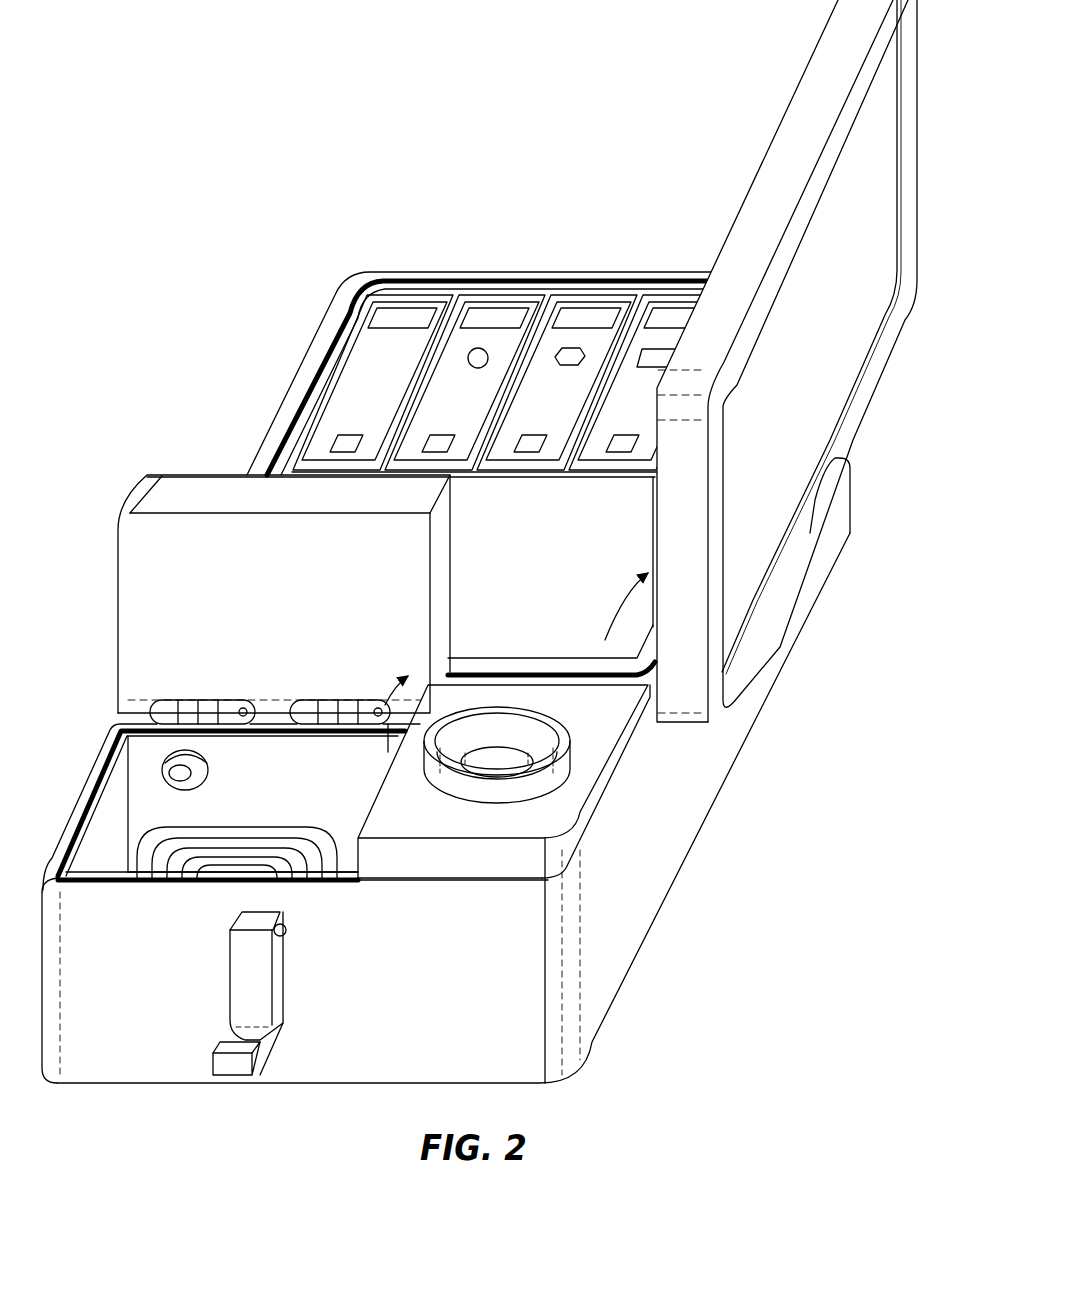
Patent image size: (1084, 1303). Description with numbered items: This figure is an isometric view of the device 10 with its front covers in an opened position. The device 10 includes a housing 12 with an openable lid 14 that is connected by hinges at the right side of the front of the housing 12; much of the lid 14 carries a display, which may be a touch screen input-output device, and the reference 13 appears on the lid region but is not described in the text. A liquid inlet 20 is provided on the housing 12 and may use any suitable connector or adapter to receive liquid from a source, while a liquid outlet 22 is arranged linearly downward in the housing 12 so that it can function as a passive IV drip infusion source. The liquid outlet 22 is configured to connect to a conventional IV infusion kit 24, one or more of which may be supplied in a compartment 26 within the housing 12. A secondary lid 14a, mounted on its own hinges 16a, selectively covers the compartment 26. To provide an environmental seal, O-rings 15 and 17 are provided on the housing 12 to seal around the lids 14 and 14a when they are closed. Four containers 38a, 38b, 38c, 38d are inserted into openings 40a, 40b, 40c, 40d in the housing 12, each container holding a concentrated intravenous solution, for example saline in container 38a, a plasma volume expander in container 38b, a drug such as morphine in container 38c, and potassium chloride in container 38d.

The device 10 is at (220, 428).
The housing 12 is at (648, 895).
The lid 13 is at (878, 300).
The openable lid 14 is at (722, 688).
The secondary lid 14a is at (128, 598).
The O-ring 15 is at (292, 405).
The hinges 16a is at (242, 708).
The O-ring 17 is at (92, 782).
The liquid inlet 20 is at (577, 762).
The liquid outlet 22 is at (192, 760).
The IV infusion kit 24 is at (238, 826).
The compartment 26 is at (355, 795).
The container 38a is at (382, 306).
The container 38b is at (482, 302).
The container 38c is at (574, 302).
The container 38d is at (660, 300).
The opening 40a is at (350, 330).
The opening 40b is at (470, 306).
The opening 40c is at (563, 306).
The opening 40d is at (652, 306).